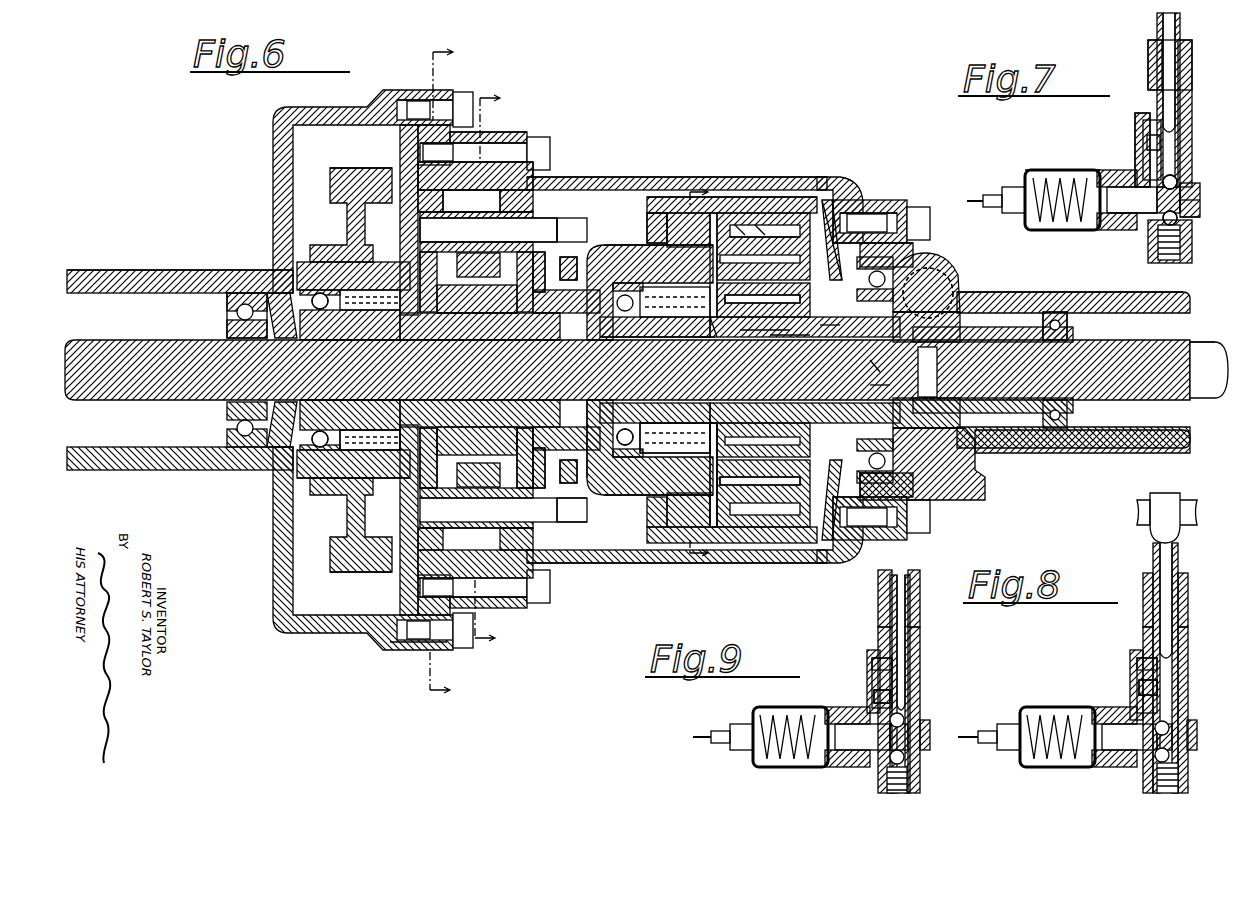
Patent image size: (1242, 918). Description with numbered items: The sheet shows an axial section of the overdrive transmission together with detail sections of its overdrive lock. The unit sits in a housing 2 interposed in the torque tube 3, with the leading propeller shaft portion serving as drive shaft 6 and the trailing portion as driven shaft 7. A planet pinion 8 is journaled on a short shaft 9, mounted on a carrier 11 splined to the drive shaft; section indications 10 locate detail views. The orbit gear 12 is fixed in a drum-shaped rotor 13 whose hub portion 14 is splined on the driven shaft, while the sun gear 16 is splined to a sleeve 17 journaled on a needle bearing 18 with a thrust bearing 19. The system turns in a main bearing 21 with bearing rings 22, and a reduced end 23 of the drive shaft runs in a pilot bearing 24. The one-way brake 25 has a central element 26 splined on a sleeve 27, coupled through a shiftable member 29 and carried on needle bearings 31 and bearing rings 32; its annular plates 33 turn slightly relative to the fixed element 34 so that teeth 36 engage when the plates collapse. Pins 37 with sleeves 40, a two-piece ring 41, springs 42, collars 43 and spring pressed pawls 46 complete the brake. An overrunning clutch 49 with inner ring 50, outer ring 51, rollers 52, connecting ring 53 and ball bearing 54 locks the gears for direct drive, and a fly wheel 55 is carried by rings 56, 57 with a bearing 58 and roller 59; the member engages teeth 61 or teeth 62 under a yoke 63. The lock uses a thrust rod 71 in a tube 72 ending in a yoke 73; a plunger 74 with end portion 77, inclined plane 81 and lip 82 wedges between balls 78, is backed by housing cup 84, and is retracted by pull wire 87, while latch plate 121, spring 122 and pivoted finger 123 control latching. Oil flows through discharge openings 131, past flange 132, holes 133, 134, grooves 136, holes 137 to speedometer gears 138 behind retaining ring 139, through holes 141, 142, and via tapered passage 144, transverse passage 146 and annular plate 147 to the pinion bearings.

In FIG. 6, the housing 2 is at (605, 180).
In FIG. 6, the torque tube 3 is at (677, 563).
In FIG. 6, the drive shaft 6 is at (180, 390).
In FIG. 6, the driven shaft 7 is at (1195, 350).
In FIG. 6, the planet pinion 8 is at (760, 230).
In FIG. 6, the pinion shaft 9 is at (740, 230).
In FIG. 6, the section line 10 is at (472, 371).
In FIG. 6, the carrier 11 is at (770, 455).
In FIG. 6, the orbit gear 12 is at (374, 151).
In FIG. 6, the rotor 13 is at (715, 200).
In FIG. 6, the hub portion 14 is at (968, 320).
In FIG. 6, the sun gear 16 is at (765, 335).
In FIG. 6, the sun gear sleeve 17 is at (650, 337).
In FIG. 6, the needle bearing 18 is at (603, 337).
In FIG. 6, the thrust bearing 19 is at (725, 337).
In FIG. 6, the main bearing 21 is at (905, 260).
In FIG. 6, the bearing rings 22 is at (830, 330).
In FIG. 6, the reduced end 23 is at (929, 438).
In FIG. 6, the pilot bearing 24 is at (871, 368).
In FIG. 6, the one-way brake 25 is at (470, 238).
In FIG. 6, the central brake element 26 is at (455, 338).
In FIG. 6, the sleeve 27 is at (395, 340).
In FIG. 6, the manually shiftable member 29 is at (545, 500).
In FIG. 6, the needle bearings 31 is at (322, 340).
In FIG. 6, the bearing rings 32 is at (265, 338).
In FIG. 6, the annular plates 33 is at (425, 200).
In FIG. 6, the fixed element 34 is at (495, 135).
In FIG. 7, the fixed element 34 is at (1192, 68).
In FIG. 6, the complementary teeth 36 is at (430, 440).
In FIG. 6, the pins 37 is at (468, 205).
In FIG. 6, the sleeves 40 is at (535, 215).
In FIG. 6, the ring 41 is at (420, 505).
In FIG. 6, the springs 42 is at (563, 530).
In FIG. 6, the collars 43 is at (585, 530).
In FIG. 6, the spring pressed pawls 46 is at (425, 320).
In FIG. 6, the one-way clutch 49 is at (658, 370).
In FIG. 6, the inner clutch ring 50 is at (655, 430).
In FIG. 6, the outer clutch ring 51 is at (635, 495).
In FIG. 6, the clutch rollers 52 is at (715, 450).
In FIG. 6, the connecting ring 53 is at (647, 215).
In FIG. 6, the ball bearing 54 is at (625, 430).
In FIG. 6, the fly wheel 55 is at (345, 565).
In FIG. 6, the clutch ring 56 is at (352, 420).
In FIG. 6, the clutch ring 57 is at (318, 485).
In FIG. 6, the bearing 58 is at (320, 430).
In FIG. 6, the clutch roller 59 is at (390, 425).
In FIG. 6, the teeth 61 is at (543, 290).
In FIG. 6, the teeth 62 is at (575, 275).
In FIG. 6, the yoke 63 is at (580, 480).
In FIG. 6, the yoke 73 is at (490, 205).
In FIG. 6, the discharge openings 131 is at (835, 215).
In FIG. 6, the annular flange 132 is at (880, 212).
In FIG. 6, the oil holes 133 is at (795, 335).
In FIG. 6, the oil holes 134 is at (707, 337).
In FIG. 6, the helical grooves 136 is at (870, 388).
In FIG. 6, the holes 137 is at (895, 312).
In FIG. 6, the speedometer gears 138 is at (945, 285).
In FIG. 6, the oil retaining ring 139 is at (1060, 312).
In FIG. 6, the oil holes 141 is at (535, 338).
In FIG. 6, the oil holes 142 is at (490, 338).
In FIG. 6, the tapered passage 144 is at (762, 304).
In FIG. 6, the transverse passage 146 is at (770, 262).
In FIG. 6, the annular plate 147 is at (760, 495).
In FIG. 7, the thrust rod 71 is at (1160, 28).
In FIG. 7, the tube 72 is at (1192, 122).
In FIG. 7, the plunger 74 is at (1145, 213).
In FIG. 7, the end portion 77 is at (1180, 212).
In FIG. 7, the balls 78 is at (1177, 180).
In FIG. 7, the inclined plane 81 is at (1185, 190).
In FIG. 7, the lip 82 is at (1185, 203).
In FIG. 7, the housing cup 84 is at (1050, 170).
In FIG. 7, the pull wire 87 is at (975, 200).
In FIG. 9, the latch plate 121 is at (878, 700).
In FIG. 8, the latch plate 121 is at (1137, 700).
In FIG. 9, the spring 122 is at (872, 660).
In FIG. 8, the pivoted finger 123 is at (1160, 688).